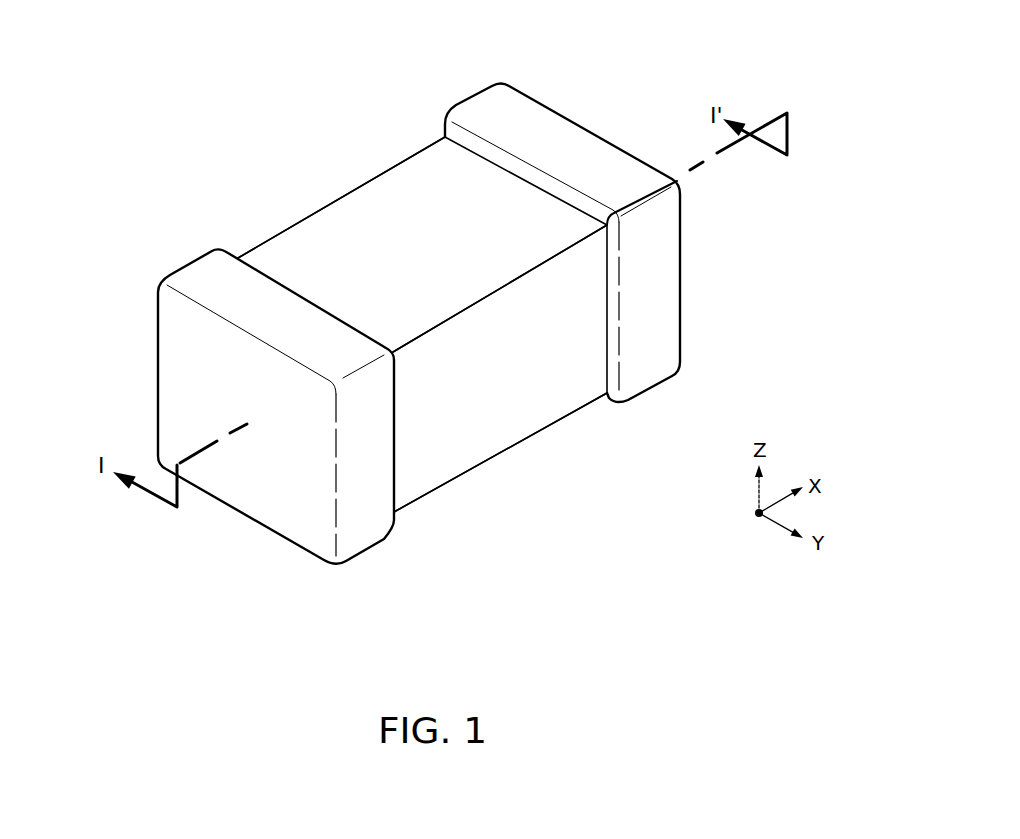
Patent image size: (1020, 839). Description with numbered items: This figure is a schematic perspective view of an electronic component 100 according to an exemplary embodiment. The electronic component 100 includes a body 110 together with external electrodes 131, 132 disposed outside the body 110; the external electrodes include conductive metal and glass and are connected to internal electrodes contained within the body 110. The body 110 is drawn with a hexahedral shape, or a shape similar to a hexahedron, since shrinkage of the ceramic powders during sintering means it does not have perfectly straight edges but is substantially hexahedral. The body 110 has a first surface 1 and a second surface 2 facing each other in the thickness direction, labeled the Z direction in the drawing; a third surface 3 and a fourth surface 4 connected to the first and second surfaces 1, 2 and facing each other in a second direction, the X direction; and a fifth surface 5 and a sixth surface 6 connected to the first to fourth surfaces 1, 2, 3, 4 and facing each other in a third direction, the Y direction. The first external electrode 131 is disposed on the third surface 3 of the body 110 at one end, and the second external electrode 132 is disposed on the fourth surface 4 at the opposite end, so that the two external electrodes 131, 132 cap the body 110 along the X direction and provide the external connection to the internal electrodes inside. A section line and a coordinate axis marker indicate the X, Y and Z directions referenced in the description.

The electronic component 100 is at (278, 45).
The body 110 is at (433, 163).
The first external electrode 131 is at (180, 408).
The second external electrode 132 is at (493, 110).
The first surface 1 is at (501, 420).
The second surface 2 is at (385, 197).
The third surface 3 is at (250, 499).
The fourth surface 4 is at (662, 266).
The fifth surface 5 is at (560, 391).
The sixth surface 6 is at (337, 217).